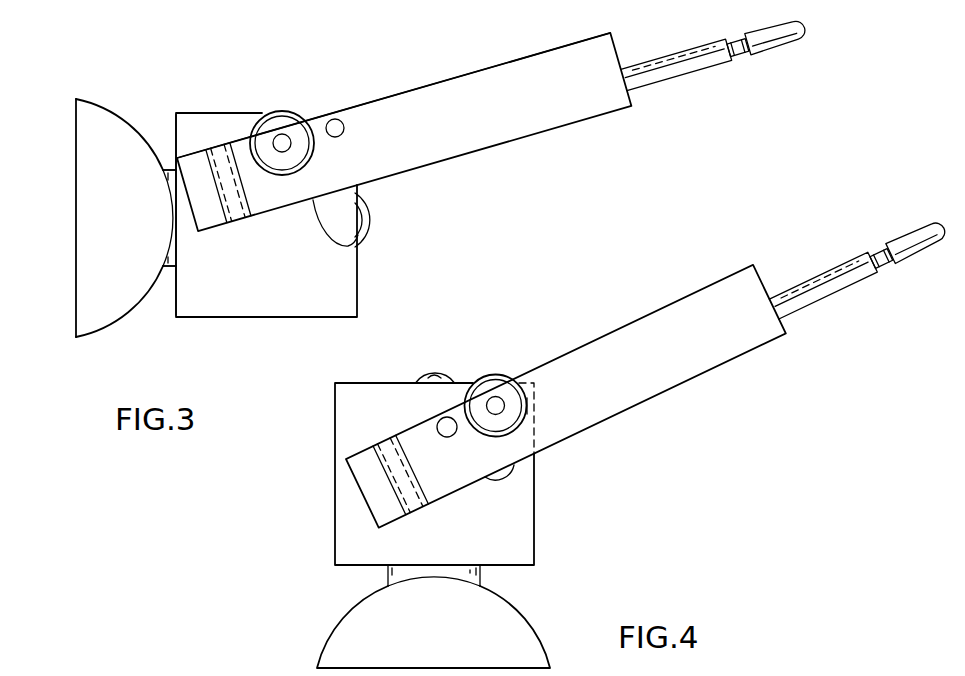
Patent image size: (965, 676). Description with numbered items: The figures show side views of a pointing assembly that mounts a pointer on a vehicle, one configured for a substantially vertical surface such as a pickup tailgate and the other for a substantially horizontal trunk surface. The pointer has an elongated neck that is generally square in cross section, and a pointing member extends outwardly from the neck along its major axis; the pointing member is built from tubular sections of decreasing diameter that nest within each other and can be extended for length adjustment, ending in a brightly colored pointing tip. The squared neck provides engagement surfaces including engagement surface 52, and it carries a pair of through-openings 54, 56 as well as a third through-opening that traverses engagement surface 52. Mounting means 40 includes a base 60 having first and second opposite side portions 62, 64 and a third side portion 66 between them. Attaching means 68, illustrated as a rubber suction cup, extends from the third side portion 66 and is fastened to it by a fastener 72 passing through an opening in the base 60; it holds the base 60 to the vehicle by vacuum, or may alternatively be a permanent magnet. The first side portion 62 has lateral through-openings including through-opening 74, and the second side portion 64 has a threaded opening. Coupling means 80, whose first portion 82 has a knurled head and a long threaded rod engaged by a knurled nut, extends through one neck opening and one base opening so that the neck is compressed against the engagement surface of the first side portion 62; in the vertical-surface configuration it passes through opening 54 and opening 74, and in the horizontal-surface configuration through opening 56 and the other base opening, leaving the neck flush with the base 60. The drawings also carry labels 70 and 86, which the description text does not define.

In FIG. 3, the mounting means 40 is at (264, 320).
In FIG. 3, the engagement surface 52 is at (358, 242).
In FIG. 4, the through-opening 54 is at (448, 414).
In FIG. 3, the through-opening 56 is at (340, 118).
In FIG. 3, the base 60 is at (360, 293).
In FIG. 4, the base 60 is at (522, 540).
In FIG. 3, the first side portion 62 is at (243, 112).
In FIG. 3, the second side portion 64 is at (233, 318).
In FIG. 3, the third side portion 66 is at (180, 292).
In FIG. 3, the attaching means 68 is at (119, 105).
In FIG. 4, the attaching means 68 is at (515, 628).
In FIG. 3, the flat face 70 is at (75, 129).
In FIG. 3, the fastener 72 is at (363, 202).
In FIG. 4, the fastener 72 is at (426, 372).
In FIG. 4, the through-opening 74 is at (514, 468).
In FIG. 3, the coupling means 80 is at (270, 183).
In FIG. 4, the coupling means 80 is at (515, 376).
In FIG. 3, the first portion 82 is at (315, 145).
In FIG. 4, the first portion 82 is at (534, 404).
In FIG. 3, the slot 86 is at (338, 262).